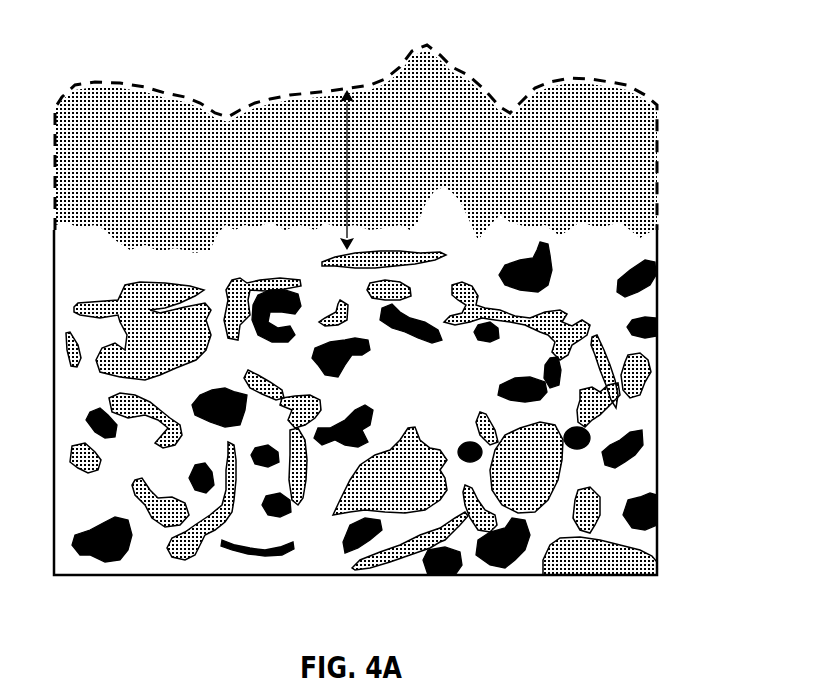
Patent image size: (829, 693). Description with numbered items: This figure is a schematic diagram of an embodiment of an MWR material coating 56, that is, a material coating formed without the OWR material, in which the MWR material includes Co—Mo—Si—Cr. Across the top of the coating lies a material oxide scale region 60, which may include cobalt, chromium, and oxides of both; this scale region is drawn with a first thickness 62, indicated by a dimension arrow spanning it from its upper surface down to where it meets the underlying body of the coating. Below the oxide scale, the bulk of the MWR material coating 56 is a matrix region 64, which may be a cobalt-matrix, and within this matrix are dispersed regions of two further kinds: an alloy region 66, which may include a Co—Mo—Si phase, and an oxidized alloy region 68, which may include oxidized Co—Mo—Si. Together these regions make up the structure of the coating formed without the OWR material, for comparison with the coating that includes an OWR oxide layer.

The MWR material coating 56 is at (97, 64).
The material oxide scale region 60 is at (638, 188).
The first thickness 62 is at (347, 143).
The matrix region 64 is at (630, 335).
The alloy region 66 is at (570, 379).
The oxidized alloy region 68 is at (645, 457).